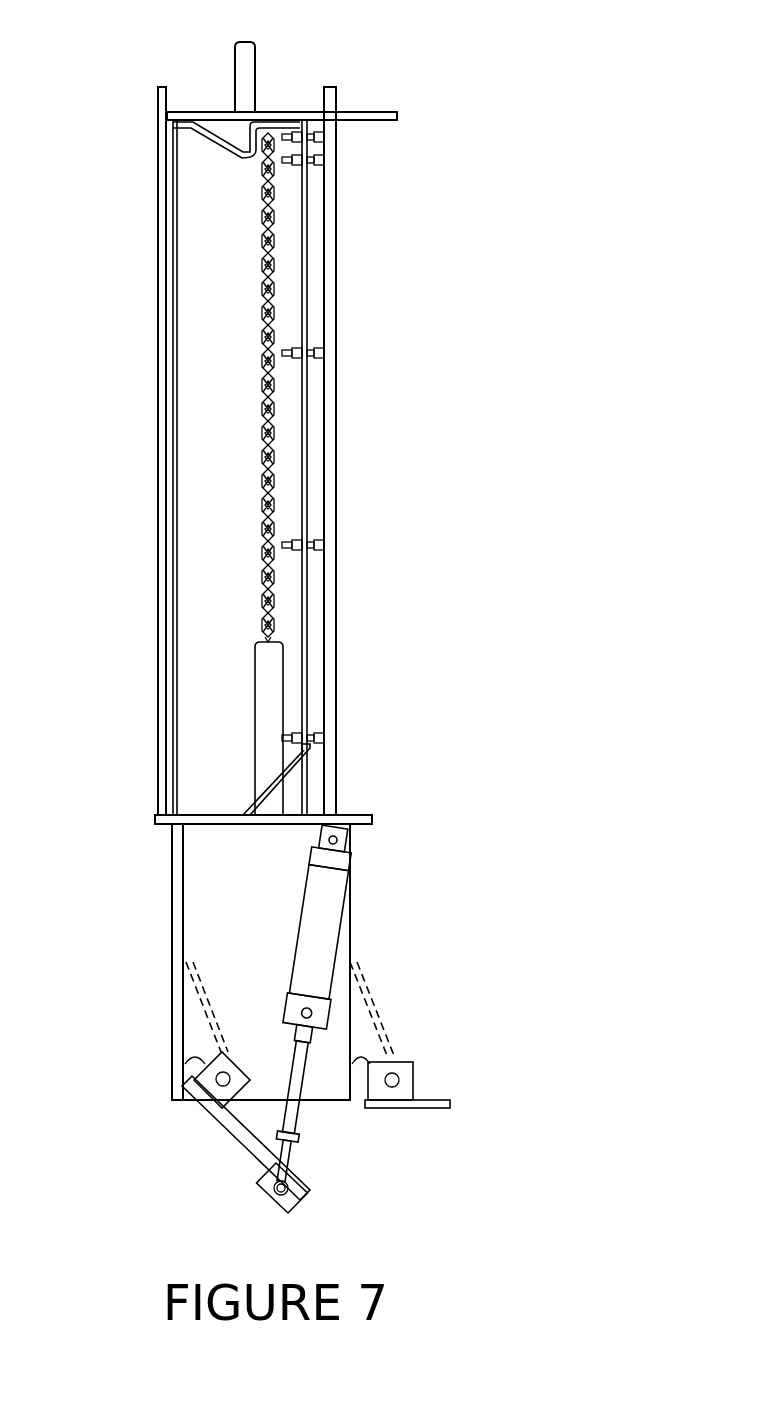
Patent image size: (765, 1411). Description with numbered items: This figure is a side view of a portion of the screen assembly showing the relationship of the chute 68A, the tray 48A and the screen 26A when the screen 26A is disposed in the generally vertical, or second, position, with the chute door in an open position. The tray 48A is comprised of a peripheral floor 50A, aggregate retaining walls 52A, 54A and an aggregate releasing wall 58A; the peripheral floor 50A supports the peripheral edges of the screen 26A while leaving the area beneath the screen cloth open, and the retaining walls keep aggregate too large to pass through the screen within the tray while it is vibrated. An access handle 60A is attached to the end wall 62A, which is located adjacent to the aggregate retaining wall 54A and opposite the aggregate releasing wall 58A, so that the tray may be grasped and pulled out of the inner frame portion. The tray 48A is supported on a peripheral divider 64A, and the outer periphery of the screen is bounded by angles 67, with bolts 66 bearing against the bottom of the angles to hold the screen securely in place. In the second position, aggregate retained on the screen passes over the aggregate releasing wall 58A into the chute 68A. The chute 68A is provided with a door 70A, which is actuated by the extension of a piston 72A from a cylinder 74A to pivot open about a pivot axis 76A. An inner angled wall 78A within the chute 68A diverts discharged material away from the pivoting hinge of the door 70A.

The end wall 62A is at (195, 112).
The access handle 60A is at (257, 50).
The aggregate retaining wall 54A is at (215, 136).
The peripheral divider 64A is at (337, 237).
The aggregate retaining wall 52A is at (250, 282).
The tray 48A is at (177, 360).
The peripheral floor 50A is at (308, 418).
The screen 26A is at (262, 585).
The bolts 66 is at (324, 551).
The angles 67 is at (275, 690).
The aggregate releasing wall 58A is at (243, 800).
The chute 68A is at (267, 894).
The cylinder 74A is at (330, 940).
The inner angled wall 78A is at (197, 987).
The pivot axis 76A is at (208, 1098).
The door 70A is at (232, 1132).
The piston 72A is at (293, 1118).